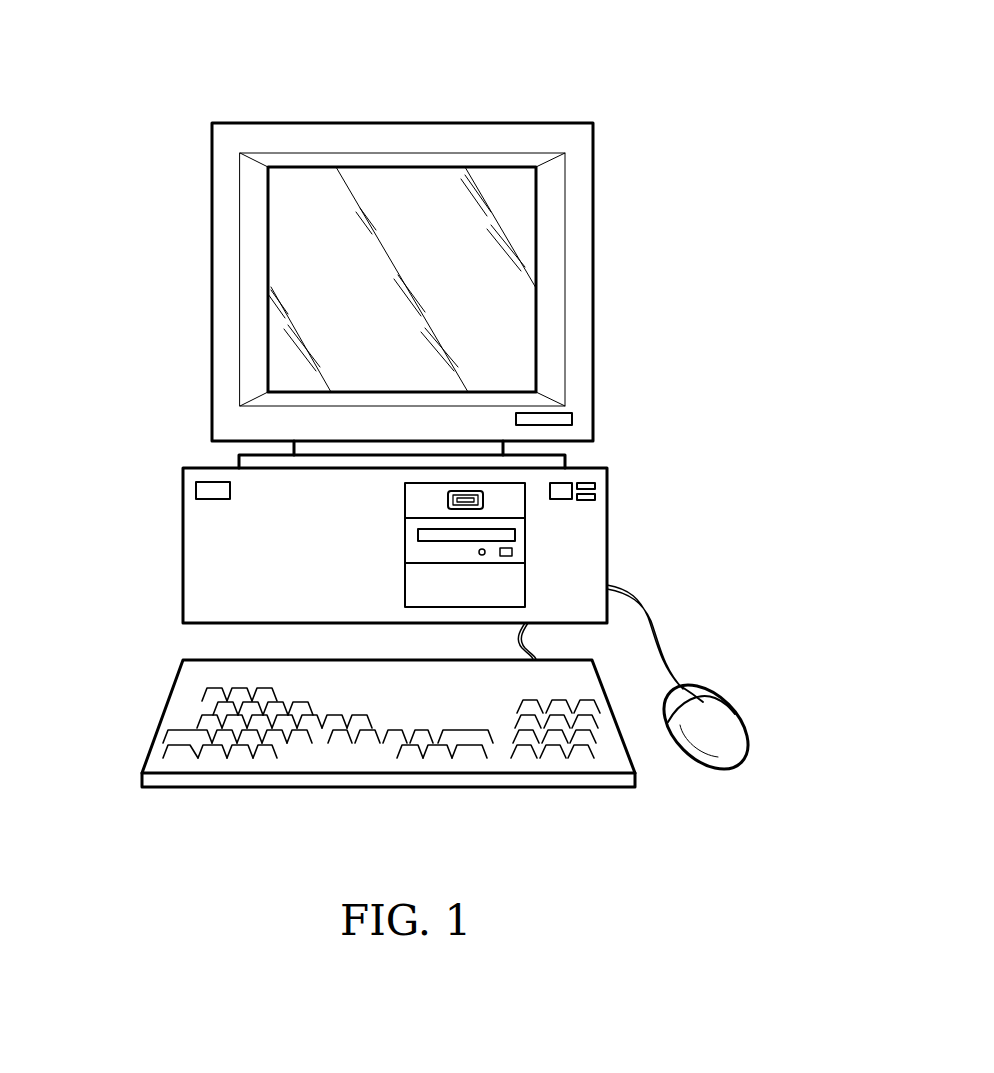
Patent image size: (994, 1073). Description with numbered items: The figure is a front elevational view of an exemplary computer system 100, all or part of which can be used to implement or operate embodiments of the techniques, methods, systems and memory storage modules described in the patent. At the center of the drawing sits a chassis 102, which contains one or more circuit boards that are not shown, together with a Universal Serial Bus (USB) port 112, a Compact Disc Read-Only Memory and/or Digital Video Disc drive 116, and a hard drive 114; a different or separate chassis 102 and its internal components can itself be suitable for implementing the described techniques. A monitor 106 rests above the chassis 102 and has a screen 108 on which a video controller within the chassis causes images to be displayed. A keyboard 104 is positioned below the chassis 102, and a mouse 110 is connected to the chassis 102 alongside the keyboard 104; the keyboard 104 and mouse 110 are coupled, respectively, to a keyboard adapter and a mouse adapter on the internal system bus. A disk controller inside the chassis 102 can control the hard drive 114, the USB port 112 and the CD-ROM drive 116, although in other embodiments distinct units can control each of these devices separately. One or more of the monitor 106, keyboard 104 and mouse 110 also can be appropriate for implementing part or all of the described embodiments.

The computer system 100 is at (583, 100).
The chassis 102 is at (183, 548).
The keyboard 104 is at (164, 712).
The monitor 106 is at (289, 123).
The screen 108 is at (318, 285).
The mouse 110 is at (722, 714).
The Universal Serial Bus (USB) port 112 is at (483, 500).
The hard drive 114 is at (515, 583).
The Compact Disc Read-Only Memory (CD-ROM) and/or Digital Video Disc (DVD) drive 116 is at (515, 542).